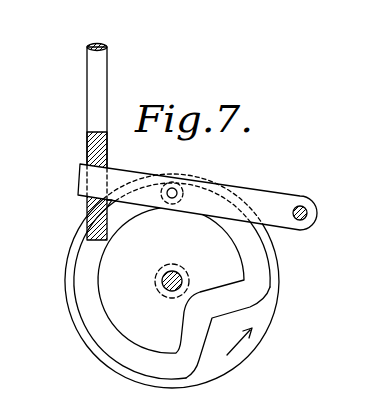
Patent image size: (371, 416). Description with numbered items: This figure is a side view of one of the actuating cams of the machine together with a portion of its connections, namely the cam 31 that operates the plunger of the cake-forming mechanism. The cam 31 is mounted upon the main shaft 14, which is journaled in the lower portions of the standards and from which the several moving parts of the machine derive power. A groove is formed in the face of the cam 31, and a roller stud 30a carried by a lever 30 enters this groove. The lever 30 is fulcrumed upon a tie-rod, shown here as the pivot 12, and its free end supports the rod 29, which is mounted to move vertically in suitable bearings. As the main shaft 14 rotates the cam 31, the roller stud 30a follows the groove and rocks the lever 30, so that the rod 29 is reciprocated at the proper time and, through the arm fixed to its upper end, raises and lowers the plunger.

The rod 29 is at (96, 88).
The lever 30 is at (270, 202).
The roller stud 30a is at (195, 179).
The pivot 12 is at (305, 221).
The main shaft 14 is at (173, 270).
The cam 31 is at (272, 298).